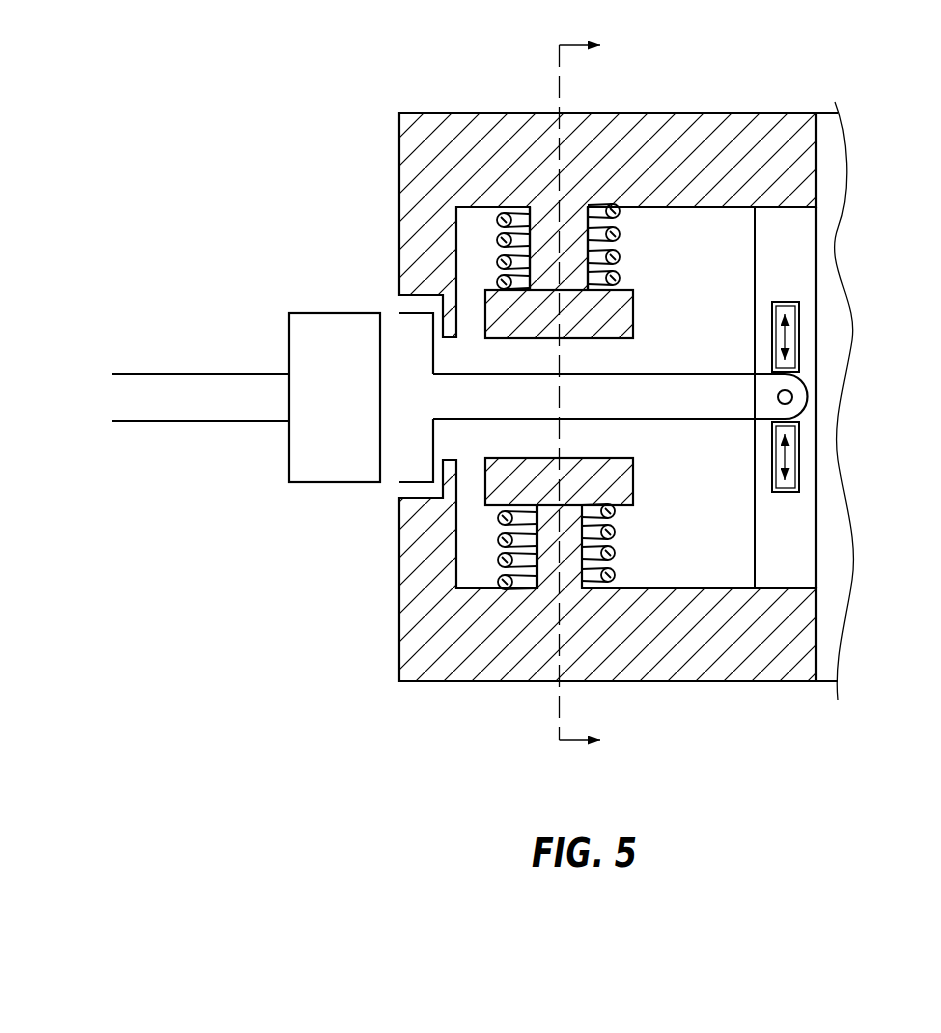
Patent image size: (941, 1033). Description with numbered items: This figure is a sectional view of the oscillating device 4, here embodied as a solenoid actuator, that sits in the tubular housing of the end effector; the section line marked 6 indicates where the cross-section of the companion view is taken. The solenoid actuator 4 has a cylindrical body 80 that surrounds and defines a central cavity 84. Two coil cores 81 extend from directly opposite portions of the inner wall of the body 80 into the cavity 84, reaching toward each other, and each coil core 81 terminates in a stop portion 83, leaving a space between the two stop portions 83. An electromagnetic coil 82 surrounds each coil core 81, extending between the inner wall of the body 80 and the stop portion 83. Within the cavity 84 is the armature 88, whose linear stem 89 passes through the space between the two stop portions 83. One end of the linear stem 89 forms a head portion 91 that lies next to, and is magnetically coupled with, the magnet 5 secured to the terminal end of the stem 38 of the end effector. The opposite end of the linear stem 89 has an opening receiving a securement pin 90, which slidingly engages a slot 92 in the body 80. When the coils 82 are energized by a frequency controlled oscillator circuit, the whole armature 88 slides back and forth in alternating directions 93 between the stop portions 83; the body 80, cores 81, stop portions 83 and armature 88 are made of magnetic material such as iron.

The oscillating device 4 is at (738, 96).
The magnet 5 is at (338, 306).
The section line (FIG. 6) 6 is at (598, 394).
The stem 38 is at (202, 383).
The cylindrical body 80 is at (443, 138).
The coil core 81 is at (568, 240).
The electromagnetic coil 82 is at (497, 236).
The stop portion 83 is at (636, 309).
The central cavity 84 is at (727, 282).
The armature 88 is at (690, 449).
The linear stem 89 is at (650, 402).
The securement pin 90 is at (794, 395).
The head portion 91 is at (412, 473).
The slot 92 is at (793, 438).
The alternating directions 93 is at (784, 335).